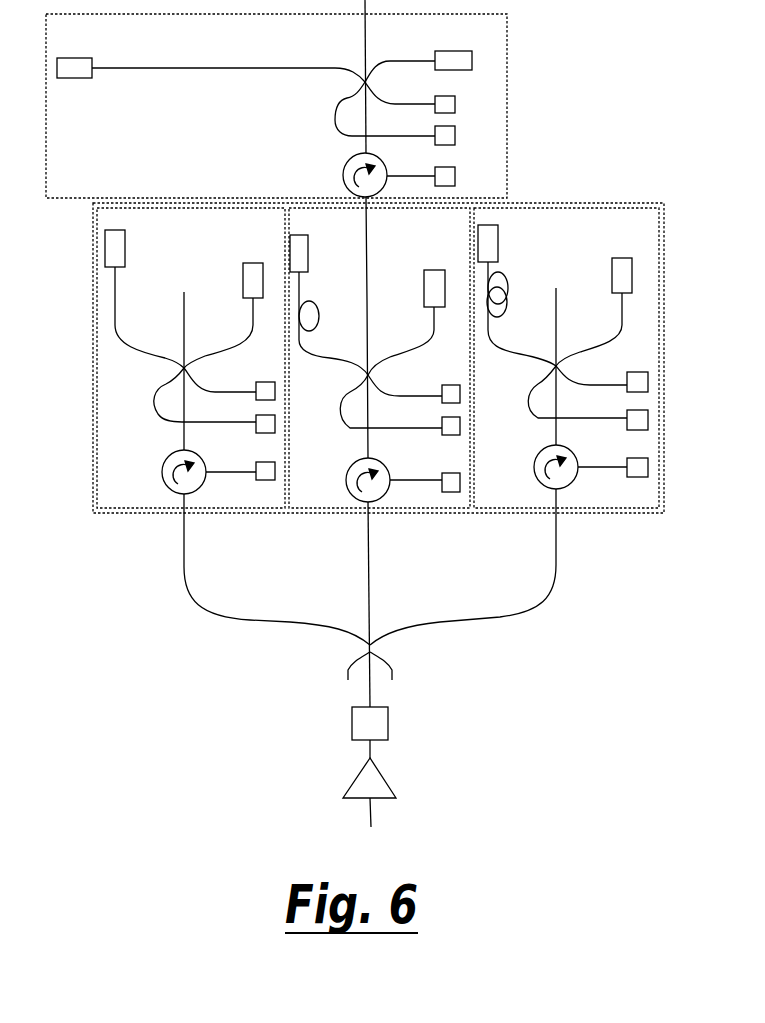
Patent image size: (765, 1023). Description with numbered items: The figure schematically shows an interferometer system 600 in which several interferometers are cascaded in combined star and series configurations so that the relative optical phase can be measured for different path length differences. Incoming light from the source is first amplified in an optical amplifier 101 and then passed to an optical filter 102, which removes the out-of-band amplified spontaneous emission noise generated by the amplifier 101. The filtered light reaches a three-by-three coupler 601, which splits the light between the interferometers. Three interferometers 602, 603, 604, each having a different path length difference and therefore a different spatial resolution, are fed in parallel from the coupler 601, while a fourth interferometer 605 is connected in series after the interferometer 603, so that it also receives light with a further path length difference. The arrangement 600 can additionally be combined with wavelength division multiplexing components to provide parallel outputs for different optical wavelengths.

The optical amplifier 101 is at (357, 779).
The optical filter 102 is at (352, 724).
The interferometer system 600 is at (135, 527).
The 3×3 coupler 601 is at (366, 648).
The interferometer 602 is at (577, 510).
The interferometer 603 is at (413, 510).
The interferometer 604 is at (213, 510).
The interferometer 605 is at (507, 122).